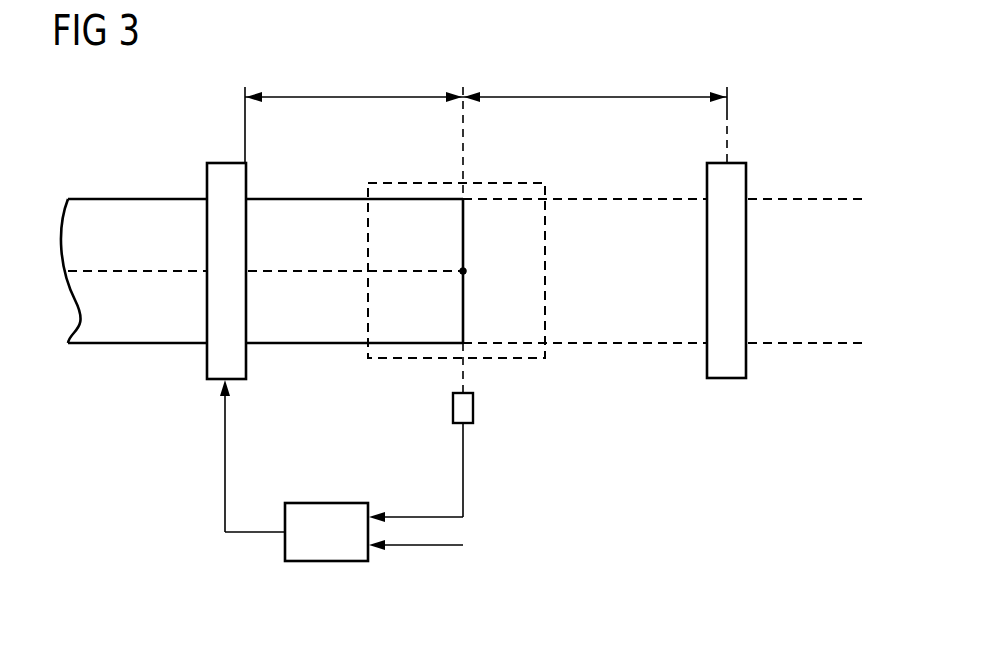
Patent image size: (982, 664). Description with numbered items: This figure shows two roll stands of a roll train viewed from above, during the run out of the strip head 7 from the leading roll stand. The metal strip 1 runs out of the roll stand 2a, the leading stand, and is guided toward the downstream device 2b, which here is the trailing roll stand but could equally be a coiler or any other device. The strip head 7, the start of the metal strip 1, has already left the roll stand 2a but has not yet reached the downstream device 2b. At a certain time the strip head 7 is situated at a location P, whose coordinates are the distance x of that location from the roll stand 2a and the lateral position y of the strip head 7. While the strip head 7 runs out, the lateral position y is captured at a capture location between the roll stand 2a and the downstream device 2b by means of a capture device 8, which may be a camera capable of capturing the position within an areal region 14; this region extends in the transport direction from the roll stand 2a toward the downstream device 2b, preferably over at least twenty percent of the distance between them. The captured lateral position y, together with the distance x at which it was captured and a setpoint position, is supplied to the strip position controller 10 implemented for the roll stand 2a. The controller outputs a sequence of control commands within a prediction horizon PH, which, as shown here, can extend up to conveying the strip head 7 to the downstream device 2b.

The metal strip 1 is at (130, 198).
The roll stand 2a is at (214, 146).
The downstream device 2b is at (741, 146).
The strip head 7 is at (466, 270).
The capture device 8 is at (473, 408).
The strip position controller 10 is at (328, 562).
The areal region 14 is at (520, 183).
The location P is at (465, 273).
The distance x is at (355, 95).
The prediction horizon PH is at (598, 95).
The lateral position y is at (463, 480).